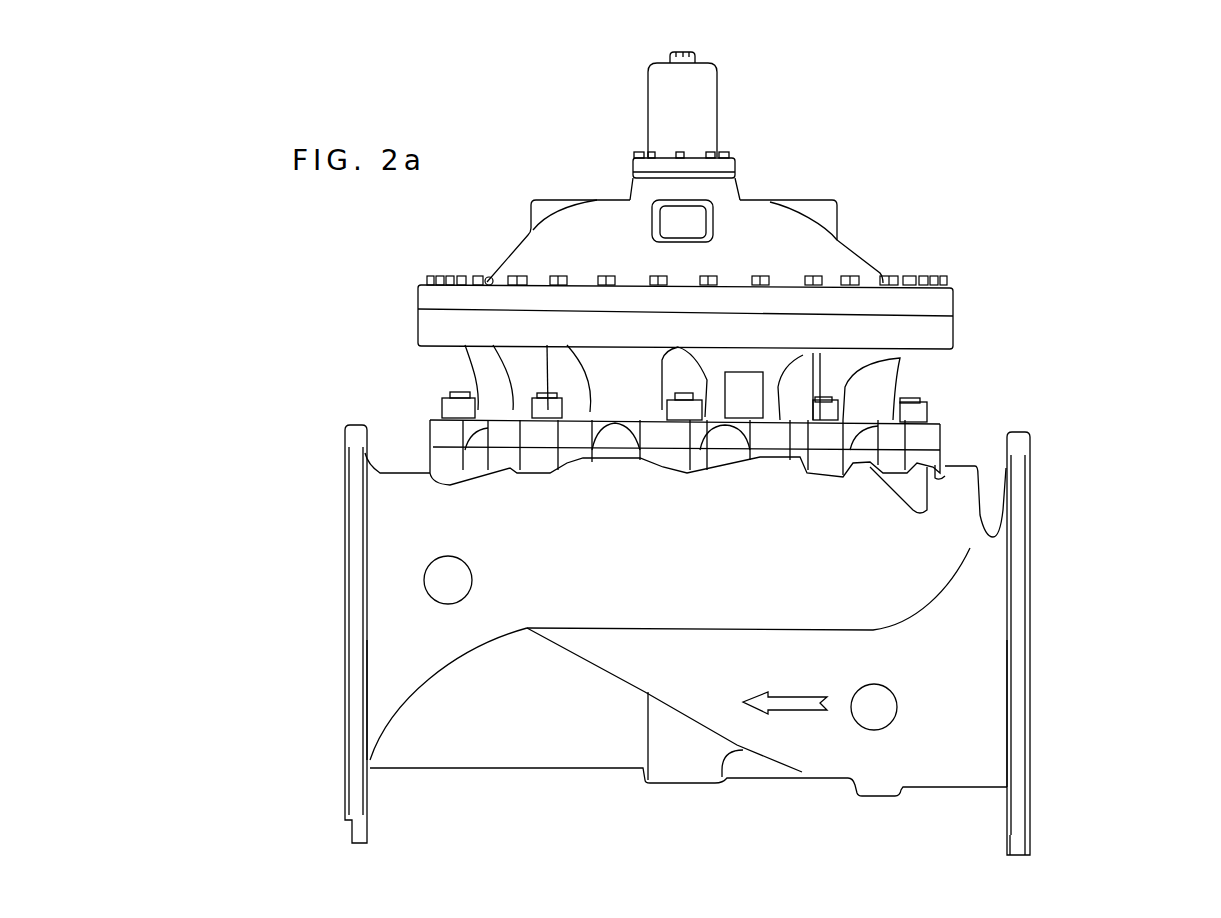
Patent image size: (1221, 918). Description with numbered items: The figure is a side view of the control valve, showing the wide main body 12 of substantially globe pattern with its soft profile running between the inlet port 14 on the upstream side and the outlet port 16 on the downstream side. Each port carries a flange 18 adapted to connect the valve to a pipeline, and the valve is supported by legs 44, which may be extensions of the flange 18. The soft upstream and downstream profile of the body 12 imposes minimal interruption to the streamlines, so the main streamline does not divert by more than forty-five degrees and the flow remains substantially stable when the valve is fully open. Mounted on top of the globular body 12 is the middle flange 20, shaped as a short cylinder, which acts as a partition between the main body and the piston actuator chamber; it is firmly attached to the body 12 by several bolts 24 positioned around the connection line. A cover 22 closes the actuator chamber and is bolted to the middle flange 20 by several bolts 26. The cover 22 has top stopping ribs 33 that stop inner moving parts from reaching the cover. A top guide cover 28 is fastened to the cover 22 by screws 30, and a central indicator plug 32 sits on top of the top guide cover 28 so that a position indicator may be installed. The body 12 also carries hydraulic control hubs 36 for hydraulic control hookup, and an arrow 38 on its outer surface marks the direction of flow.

The main body 12 is at (620, 597).
The inlet port 14 is at (1035, 640).
The outlet port 16 is at (340, 633).
The flange 18 is at (352, 518).
The middle flange 20 is at (953, 332).
The cover 22 is at (803, 258).
The bolts 24 is at (933, 407).
The bolts 26 is at (952, 282).
The top guide cover 28 is at (705, 115).
The screws 30 is at (680, 153).
The central indicator plug 32 is at (688, 50).
The top stopping ribs 33 is at (842, 215).
The hydraulic control hubs 36 is at (450, 582).
The arrow 38 is at (808, 705).
The legs 44 is at (1030, 840).